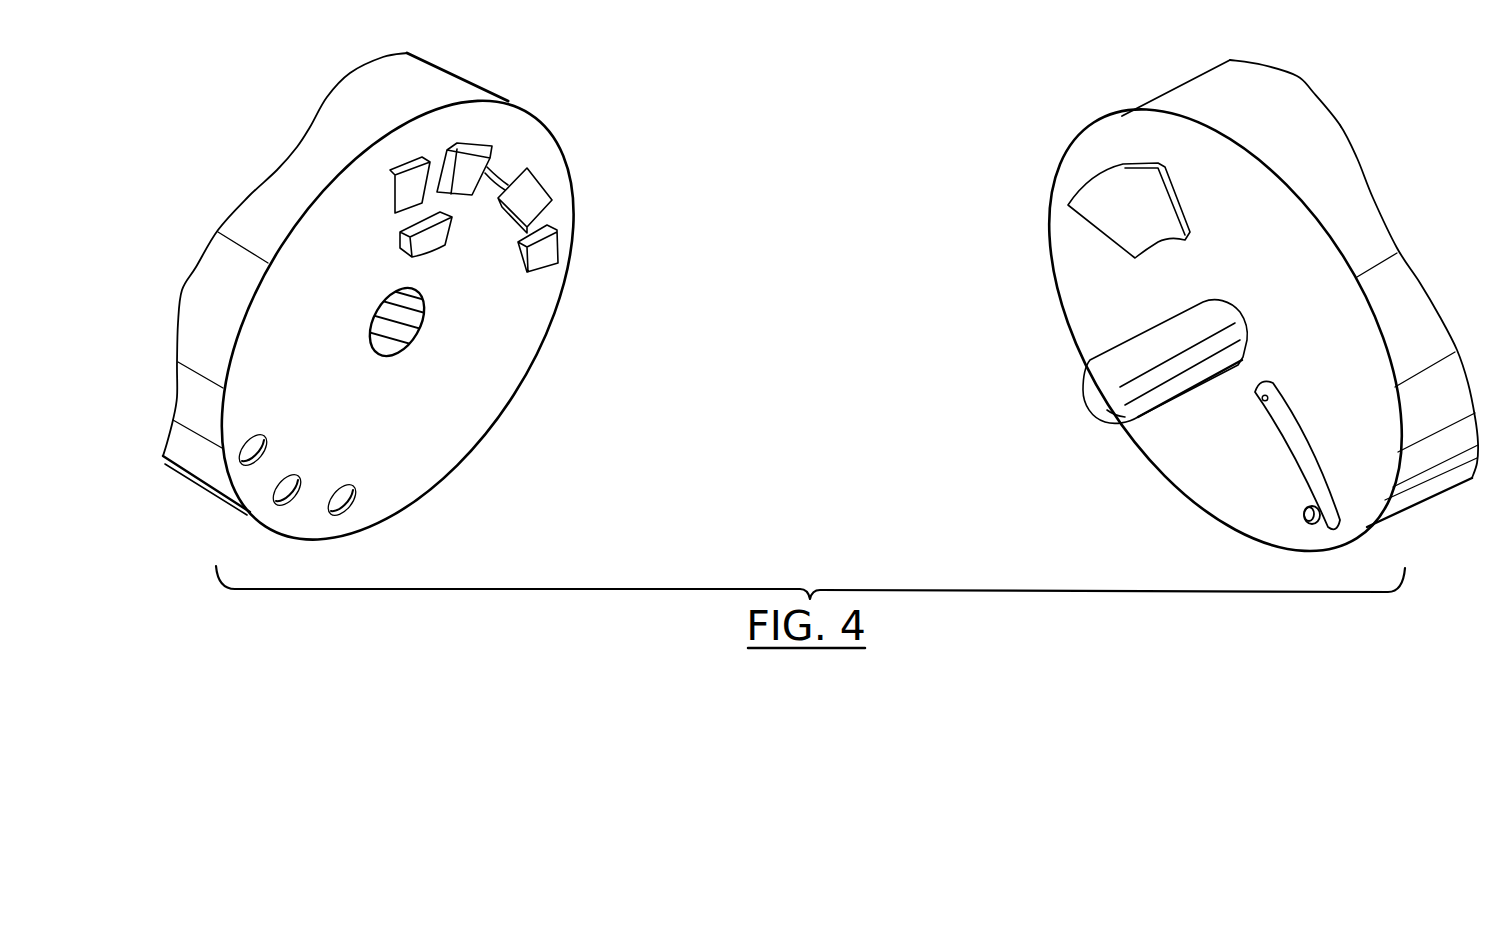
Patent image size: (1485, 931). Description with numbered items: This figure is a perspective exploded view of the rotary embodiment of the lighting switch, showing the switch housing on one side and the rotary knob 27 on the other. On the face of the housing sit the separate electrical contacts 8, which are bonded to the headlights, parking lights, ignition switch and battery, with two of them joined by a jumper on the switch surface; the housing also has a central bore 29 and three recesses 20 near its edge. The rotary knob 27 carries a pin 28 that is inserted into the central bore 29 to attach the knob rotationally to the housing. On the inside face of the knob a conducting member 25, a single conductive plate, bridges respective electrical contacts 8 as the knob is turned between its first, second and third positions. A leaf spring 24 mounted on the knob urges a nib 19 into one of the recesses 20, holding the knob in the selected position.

The electrical contacts 8 is at (490, 158).
The nib 19 is at (1304, 514).
The recesses 20 is at (337, 507).
The leaf spring 24 is at (1280, 423).
The conducting member 25 is at (1094, 198).
The rotary knob 27 is at (1290, 235).
The pin 28 is at (1095, 388).
The central bore 29 is at (390, 340).